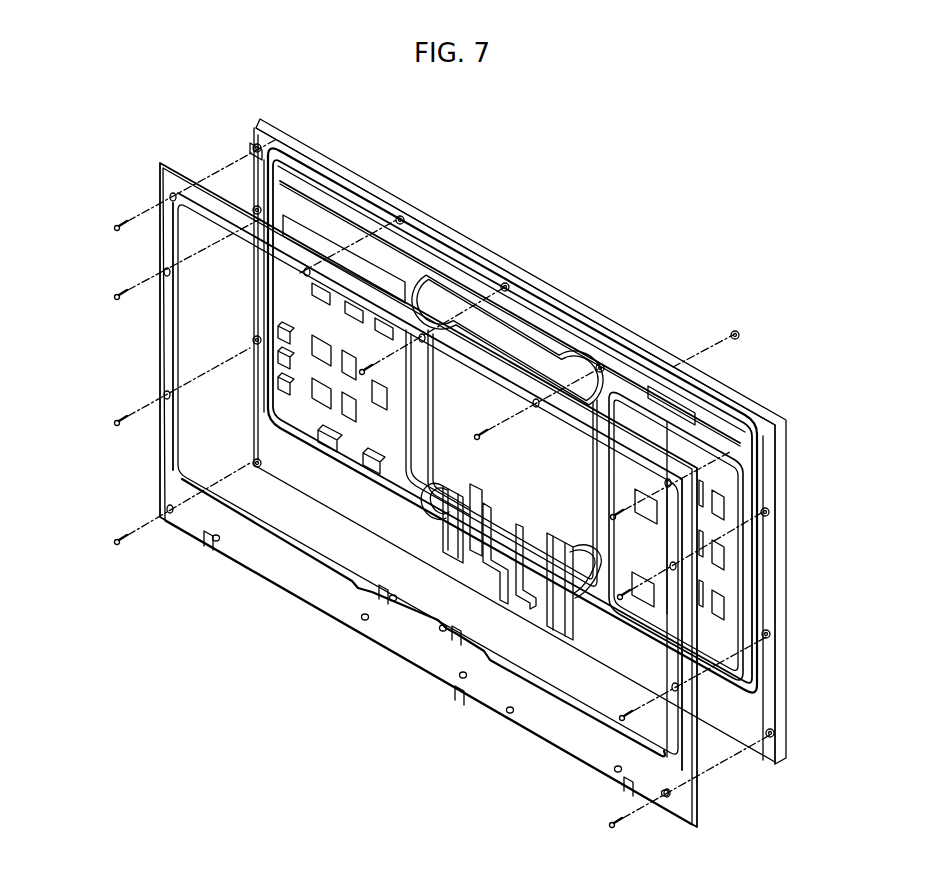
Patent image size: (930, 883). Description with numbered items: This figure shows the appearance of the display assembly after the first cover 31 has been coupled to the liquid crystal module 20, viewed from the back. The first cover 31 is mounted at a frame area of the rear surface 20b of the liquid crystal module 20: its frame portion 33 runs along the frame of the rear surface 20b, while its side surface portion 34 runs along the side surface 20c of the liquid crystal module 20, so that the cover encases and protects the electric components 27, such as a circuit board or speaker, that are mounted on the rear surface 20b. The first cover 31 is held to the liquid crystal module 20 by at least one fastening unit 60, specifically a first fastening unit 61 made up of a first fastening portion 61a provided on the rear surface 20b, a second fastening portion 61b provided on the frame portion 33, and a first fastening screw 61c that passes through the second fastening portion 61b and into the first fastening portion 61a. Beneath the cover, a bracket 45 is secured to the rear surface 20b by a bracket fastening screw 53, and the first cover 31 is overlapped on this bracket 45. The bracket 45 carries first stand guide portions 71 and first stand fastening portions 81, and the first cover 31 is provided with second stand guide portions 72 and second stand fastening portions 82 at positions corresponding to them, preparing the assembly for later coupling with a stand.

The liquid crystal module 20 is at (587, 297).
The rear surface 20b is at (466, 300).
The side surface 20c is at (663, 356).
The electric components 27 is at (290, 302).
The first cover 31 is at (92, 320).
The frame portion 33 is at (162, 378).
The side surface portion 34 is at (160, 320).
The bracket 45 is at (490, 511).
The bracket fastening screw 53 is at (458, 482).
The fastening unit 60 is at (423, 457).
The first fastening unit 61 is at (423, 457).
The first fastening portion 61a is at (256, 147).
The second fastening portion 61b is at (171, 196).
The first fastening screw 61c is at (423, 484).
The first stand guide portions 71 is at (480, 490).
The second stand guide portions 72 is at (382, 584).
The first stand fastening portions 81 is at (545, 627).
The second stand fastening portions 82 is at (396, 598).